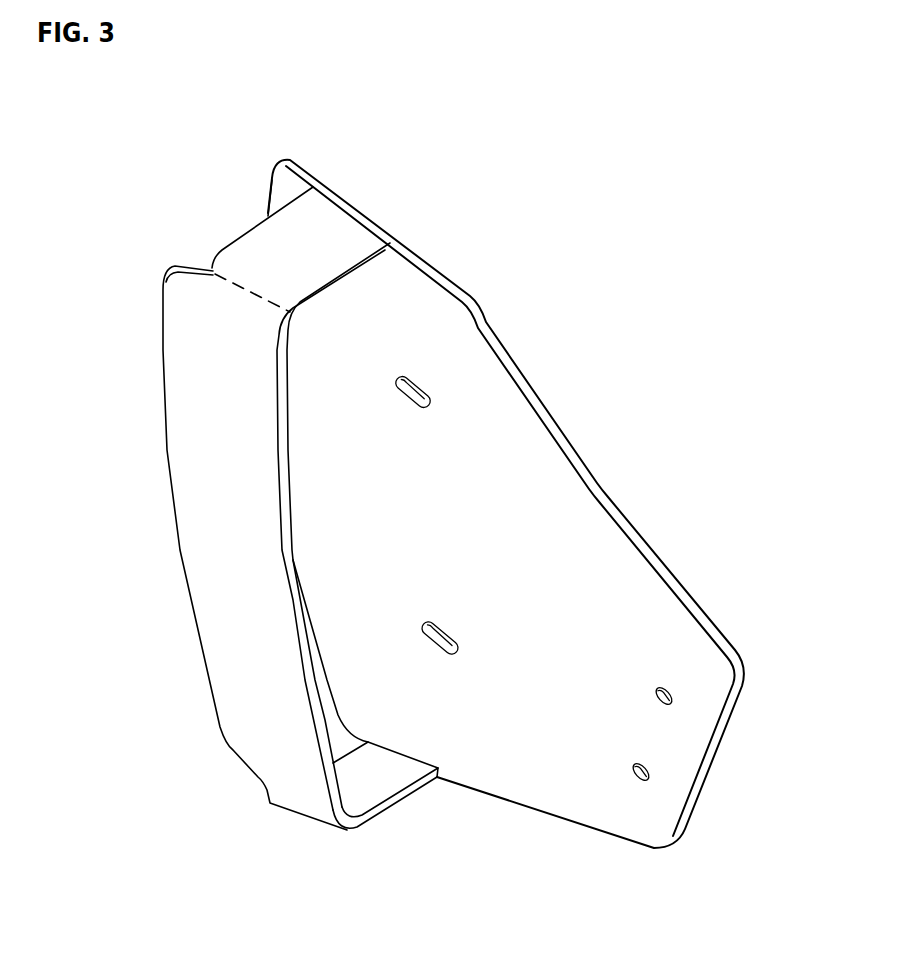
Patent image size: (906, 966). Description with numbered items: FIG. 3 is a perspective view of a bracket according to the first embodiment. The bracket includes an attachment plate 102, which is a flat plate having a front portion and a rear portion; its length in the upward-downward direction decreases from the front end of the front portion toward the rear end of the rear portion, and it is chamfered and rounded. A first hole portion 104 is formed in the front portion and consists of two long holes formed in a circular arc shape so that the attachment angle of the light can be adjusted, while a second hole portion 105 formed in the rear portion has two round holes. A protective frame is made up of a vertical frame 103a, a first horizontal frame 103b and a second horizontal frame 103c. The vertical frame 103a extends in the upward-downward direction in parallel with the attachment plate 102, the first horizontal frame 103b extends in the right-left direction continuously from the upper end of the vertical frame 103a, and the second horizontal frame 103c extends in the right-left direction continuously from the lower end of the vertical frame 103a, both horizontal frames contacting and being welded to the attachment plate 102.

The attachment plate 102 is at (548, 745).
The vertical frame 103a is at (233, 633).
The first horizontal frame 103b is at (280, 248).
The second horizontal frame 103c is at (373, 782).
The first hole portion 104 is at (443, 634).
The second hole portion 105 is at (672, 702).